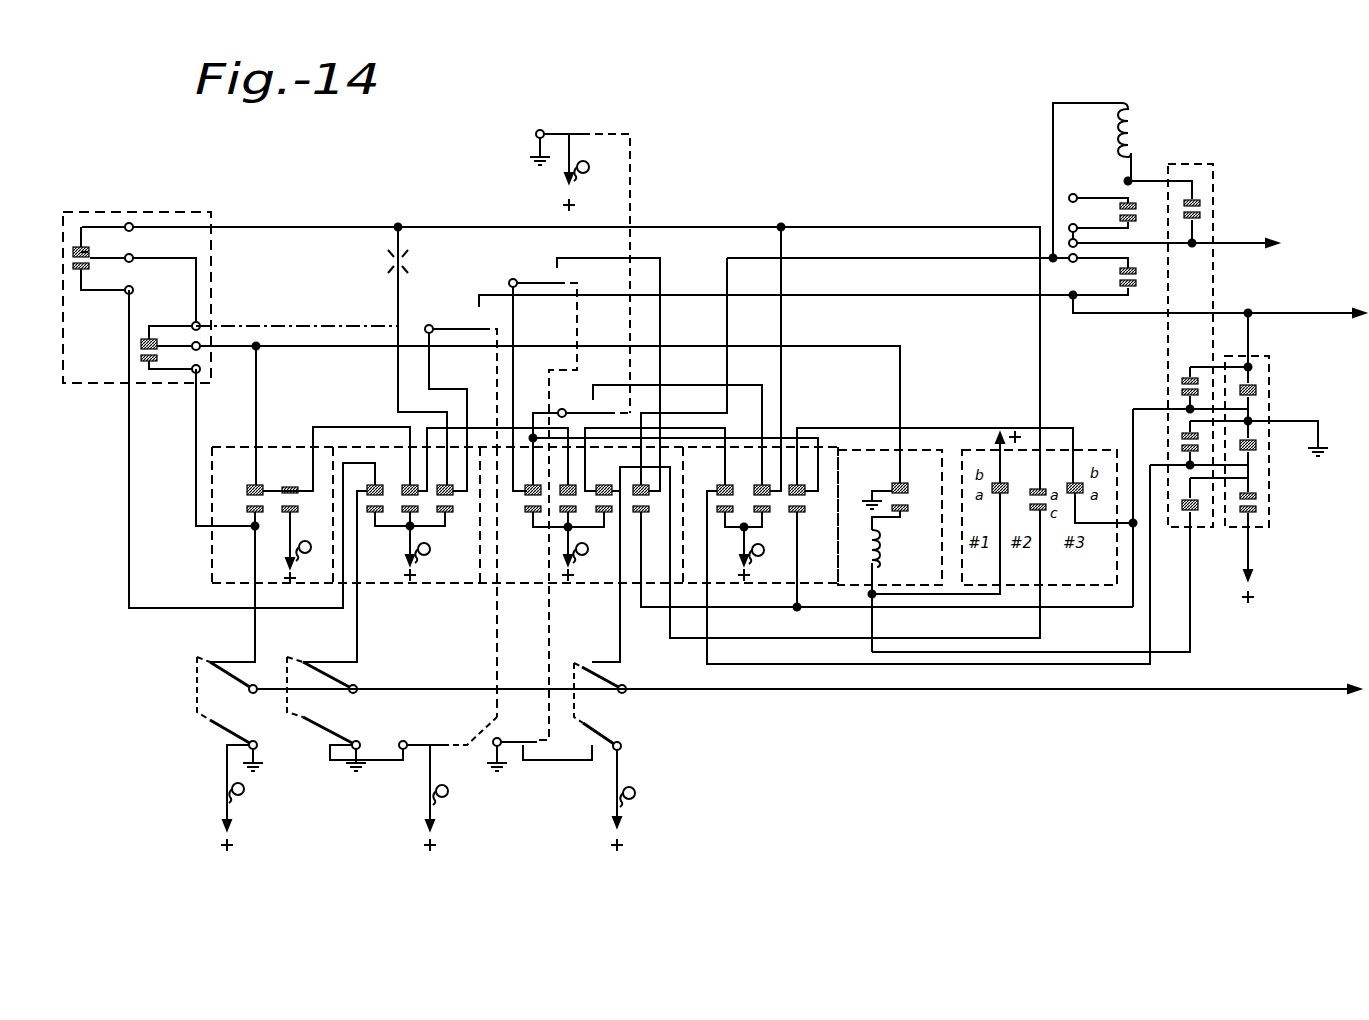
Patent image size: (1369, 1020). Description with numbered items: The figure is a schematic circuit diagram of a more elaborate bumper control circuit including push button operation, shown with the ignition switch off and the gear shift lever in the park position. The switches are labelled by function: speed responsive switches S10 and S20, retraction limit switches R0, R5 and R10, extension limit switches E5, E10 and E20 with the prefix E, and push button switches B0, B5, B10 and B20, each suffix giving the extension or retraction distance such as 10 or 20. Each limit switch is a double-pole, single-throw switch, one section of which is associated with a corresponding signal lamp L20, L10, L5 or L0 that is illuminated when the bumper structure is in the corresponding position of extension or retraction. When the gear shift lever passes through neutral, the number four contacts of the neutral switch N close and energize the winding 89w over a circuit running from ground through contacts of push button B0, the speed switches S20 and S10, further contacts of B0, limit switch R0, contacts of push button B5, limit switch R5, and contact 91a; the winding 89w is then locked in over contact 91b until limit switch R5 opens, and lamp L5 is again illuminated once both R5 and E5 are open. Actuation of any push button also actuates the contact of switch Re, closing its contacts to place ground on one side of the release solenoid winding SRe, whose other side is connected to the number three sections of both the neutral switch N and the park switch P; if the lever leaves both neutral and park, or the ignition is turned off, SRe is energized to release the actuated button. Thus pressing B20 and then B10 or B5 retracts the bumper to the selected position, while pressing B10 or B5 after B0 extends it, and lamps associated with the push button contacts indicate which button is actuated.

The speed responsive switch S10 is at (113, 298).
The speed responsive switch S20 is at (153, 315).
The retraction distance 10 is at (415, 319).
The extension distance 20 is at (297, 311).
The retraction limit switch R10 is at (461, 396).
The retraction limit switch R5 is at (584, 497).
The retraction limit switch R0 is at (674, 440).
The signal lamp L0 is at (580, 271).
The winding 89w is at (1138, 123).
The lock-in contact 91b is at (1154, 218).
The contact 91a is at (1154, 288).
The neutral switch N is at (1214, 170).
The park switch P is at (1271, 365).
The push button switch B20 is at (310, 544).
The push button switch B10 is at (435, 545).
The push button switch B5 is at (820, 519).
The push button switch B0 is at (918, 546).
The release switch Re is at (941, 541).
The release solenoid winding SRe is at (880, 560).
The extension limit switch E20 is at (230, 714).
The extension limit switch E10 is at (345, 714).
The extension limit switch E5 is at (556, 717).
The signal lamp L20 is at (248, 798).
The signal lamp L10 is at (448, 784).
The signal lamp L5 is at (635, 800).
The extension limit switch prefix E is at (808, 679).